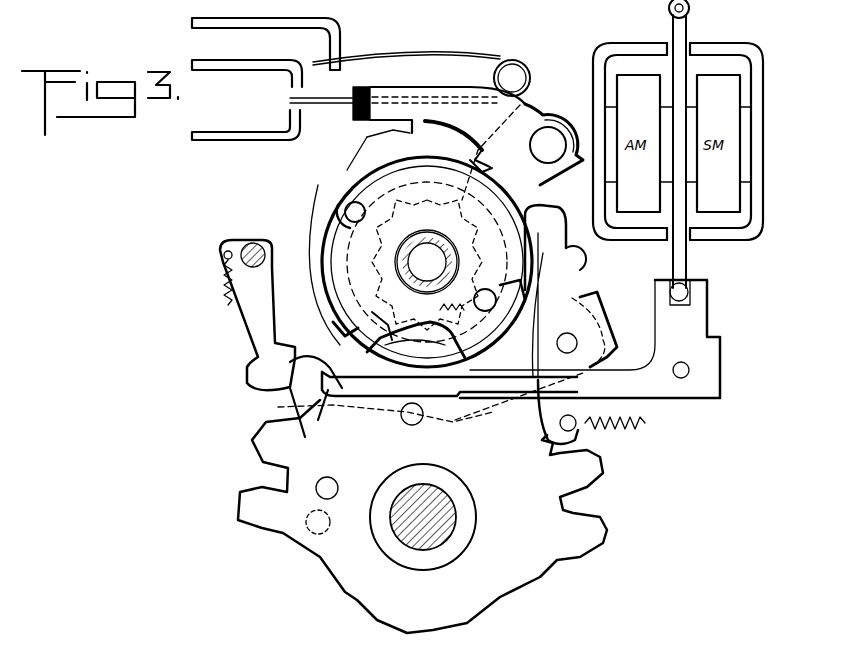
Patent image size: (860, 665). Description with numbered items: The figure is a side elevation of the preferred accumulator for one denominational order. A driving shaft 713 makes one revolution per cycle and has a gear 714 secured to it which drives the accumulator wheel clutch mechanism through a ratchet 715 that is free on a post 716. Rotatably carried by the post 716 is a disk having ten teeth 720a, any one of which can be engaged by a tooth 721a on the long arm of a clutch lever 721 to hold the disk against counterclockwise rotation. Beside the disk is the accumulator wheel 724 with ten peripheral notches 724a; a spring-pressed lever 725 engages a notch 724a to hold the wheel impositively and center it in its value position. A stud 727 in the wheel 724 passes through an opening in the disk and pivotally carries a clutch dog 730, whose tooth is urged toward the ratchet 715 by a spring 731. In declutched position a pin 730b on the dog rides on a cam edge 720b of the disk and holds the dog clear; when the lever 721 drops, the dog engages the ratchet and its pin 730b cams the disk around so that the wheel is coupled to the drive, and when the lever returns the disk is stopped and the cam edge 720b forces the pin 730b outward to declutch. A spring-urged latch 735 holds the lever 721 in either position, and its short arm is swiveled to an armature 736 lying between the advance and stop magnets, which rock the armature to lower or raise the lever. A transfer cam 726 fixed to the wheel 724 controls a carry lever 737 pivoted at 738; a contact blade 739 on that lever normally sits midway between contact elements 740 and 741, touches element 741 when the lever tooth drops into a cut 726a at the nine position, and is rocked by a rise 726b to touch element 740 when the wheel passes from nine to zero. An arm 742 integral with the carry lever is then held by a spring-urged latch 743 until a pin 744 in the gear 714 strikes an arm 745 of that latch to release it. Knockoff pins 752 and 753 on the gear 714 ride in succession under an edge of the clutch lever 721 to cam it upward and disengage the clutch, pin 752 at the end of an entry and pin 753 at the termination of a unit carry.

The driving shaft 713 is at (405, 540).
The gear 714 is at (590, 560).
The ratchet 715 is at (431, 182).
The post 716 is at (420, 245).
The teeth 720a is at (449, 384).
The cam edge 720b is at (392, 324).
The clutch lever 721 is at (713, 352).
The tooth 721a is at (440, 398).
The accumulator wheel 724 is at (483, 160).
The peripheral notches 724a is at (480, 172).
The spring-pressed lever 725 is at (582, 267).
The transfer cam 726 is at (330, 192).
The cut 726a is at (347, 170).
The rise 726b is at (367, 137).
The stud 727 is at (344, 205).
The clutch dog 730 is at (325, 292).
The pin 730b is at (338, 328).
The spring 731 is at (420, 335).
The spring-urged latch 735 is at (262, 347).
The armature 736 is at (688, 258).
The carry lever 737 is at (522, 107).
The pivot 738 is at (548, 150).
The contact blade 739 is at (300, 100).
The contact element 740 is at (254, 60).
The contact element 741 is at (262, 140).
The arm 742 is at (470, 212).
The spring-urged latch 743 is at (496, 300).
The pin 744 is at (310, 532).
The arm 745 is at (364, 396).
The knockoff pin 752 is at (418, 425).
The knockoff pin 753 is at (334, 479).